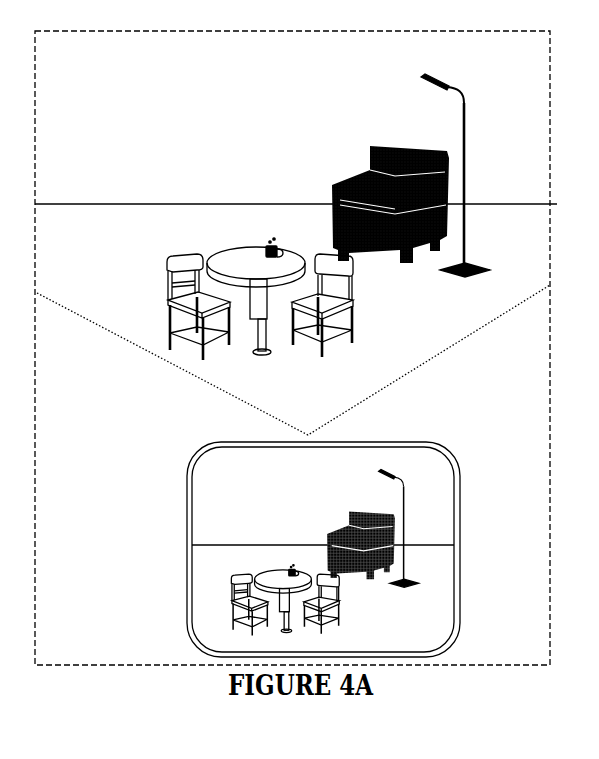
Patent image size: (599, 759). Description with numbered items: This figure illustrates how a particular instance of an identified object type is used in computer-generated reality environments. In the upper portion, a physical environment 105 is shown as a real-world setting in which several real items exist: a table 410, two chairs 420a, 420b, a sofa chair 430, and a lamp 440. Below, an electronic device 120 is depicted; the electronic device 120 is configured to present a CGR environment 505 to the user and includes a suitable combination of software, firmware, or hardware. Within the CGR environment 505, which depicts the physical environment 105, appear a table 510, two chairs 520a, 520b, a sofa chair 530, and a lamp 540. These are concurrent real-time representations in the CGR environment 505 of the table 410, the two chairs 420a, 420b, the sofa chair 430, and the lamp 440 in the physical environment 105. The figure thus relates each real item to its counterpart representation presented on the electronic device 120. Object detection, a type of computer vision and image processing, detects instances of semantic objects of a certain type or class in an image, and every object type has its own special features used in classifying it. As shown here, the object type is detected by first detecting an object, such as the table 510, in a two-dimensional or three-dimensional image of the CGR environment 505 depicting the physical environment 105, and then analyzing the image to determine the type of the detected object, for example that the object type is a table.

The physical environment 105 is at (448, 61).
The electronic device 120 is at (182, 520).
The table 410 is at (235, 250).
The chair 420a is at (175, 272).
The chair 420b is at (347, 297).
The sofa chair 430 is at (420, 152).
The lamp 440 is at (467, 253).
The CGR environment 505 is at (242, 471).
The table 510 is at (263, 577).
The chair 520a is at (233, 603).
The chair 520b is at (332, 600).
The sofa chair 530 is at (357, 512).
The lamp 540 is at (405, 490).